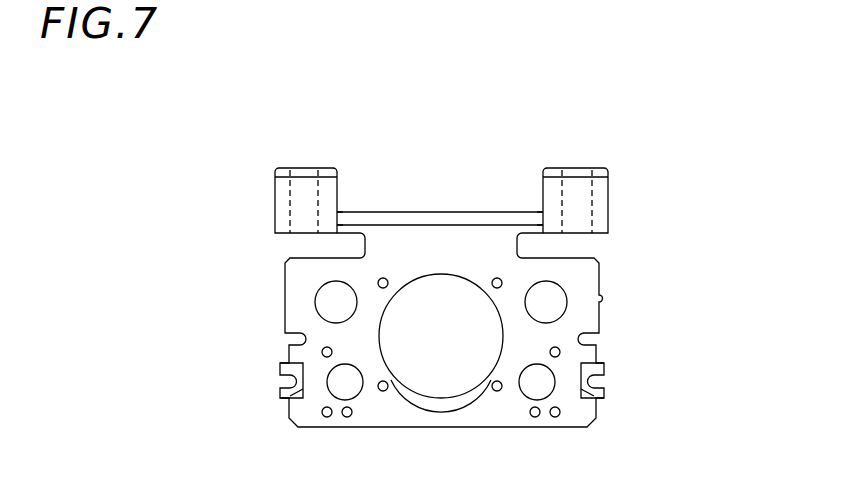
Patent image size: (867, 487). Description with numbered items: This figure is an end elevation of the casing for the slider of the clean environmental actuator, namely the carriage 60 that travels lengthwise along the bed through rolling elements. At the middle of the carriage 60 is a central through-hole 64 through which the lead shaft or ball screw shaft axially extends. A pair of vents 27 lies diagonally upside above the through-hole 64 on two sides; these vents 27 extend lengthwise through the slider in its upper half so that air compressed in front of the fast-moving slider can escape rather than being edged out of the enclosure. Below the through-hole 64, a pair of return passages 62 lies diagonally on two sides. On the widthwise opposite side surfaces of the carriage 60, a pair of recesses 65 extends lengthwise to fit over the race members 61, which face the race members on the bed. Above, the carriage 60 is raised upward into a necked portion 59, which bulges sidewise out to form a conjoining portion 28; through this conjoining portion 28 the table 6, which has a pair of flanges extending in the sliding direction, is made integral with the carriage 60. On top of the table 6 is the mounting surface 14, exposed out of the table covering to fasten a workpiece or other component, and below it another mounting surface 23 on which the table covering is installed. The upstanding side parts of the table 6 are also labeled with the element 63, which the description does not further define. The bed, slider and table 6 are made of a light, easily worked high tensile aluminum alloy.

The table 6 is at (303, 166).
The mounting surface 14 is at (317, 168).
The mounting surface 23 is at (290, 168).
The vents 27 is at (323, 299).
The conjoining portion 28 is at (354, 218).
The necked portion 59 is at (431, 242).
The carriage 60 is at (474, 213).
The race members 61 is at (282, 373).
The return passages 62 is at (352, 388).
The terminal post 63 is at (295, 205).
The central through-hole 64 is at (427, 349).
The recesses 65 is at (290, 395).